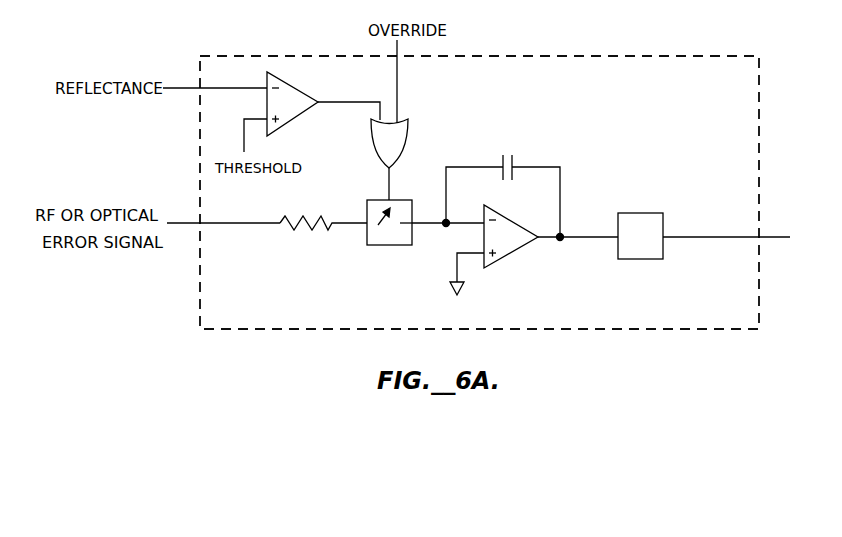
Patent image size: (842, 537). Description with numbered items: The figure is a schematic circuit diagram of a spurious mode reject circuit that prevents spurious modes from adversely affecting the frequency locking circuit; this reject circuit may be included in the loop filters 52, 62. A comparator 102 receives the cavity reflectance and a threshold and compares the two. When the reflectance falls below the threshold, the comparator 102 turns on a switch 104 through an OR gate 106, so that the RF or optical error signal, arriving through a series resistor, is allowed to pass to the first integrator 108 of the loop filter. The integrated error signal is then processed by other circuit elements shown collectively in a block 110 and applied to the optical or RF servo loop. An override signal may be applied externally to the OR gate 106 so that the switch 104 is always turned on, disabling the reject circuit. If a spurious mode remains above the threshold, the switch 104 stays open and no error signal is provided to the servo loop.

The loop filter 52 is at (603, 55).
The loop filter 62 is at (479, 192).
The comparator 102 is at (295, 83).
The switch 104 is at (398, 247).
The OR gate 106 is at (407, 130).
The first integrator 108 is at (512, 255).
The block 110 is at (655, 213).